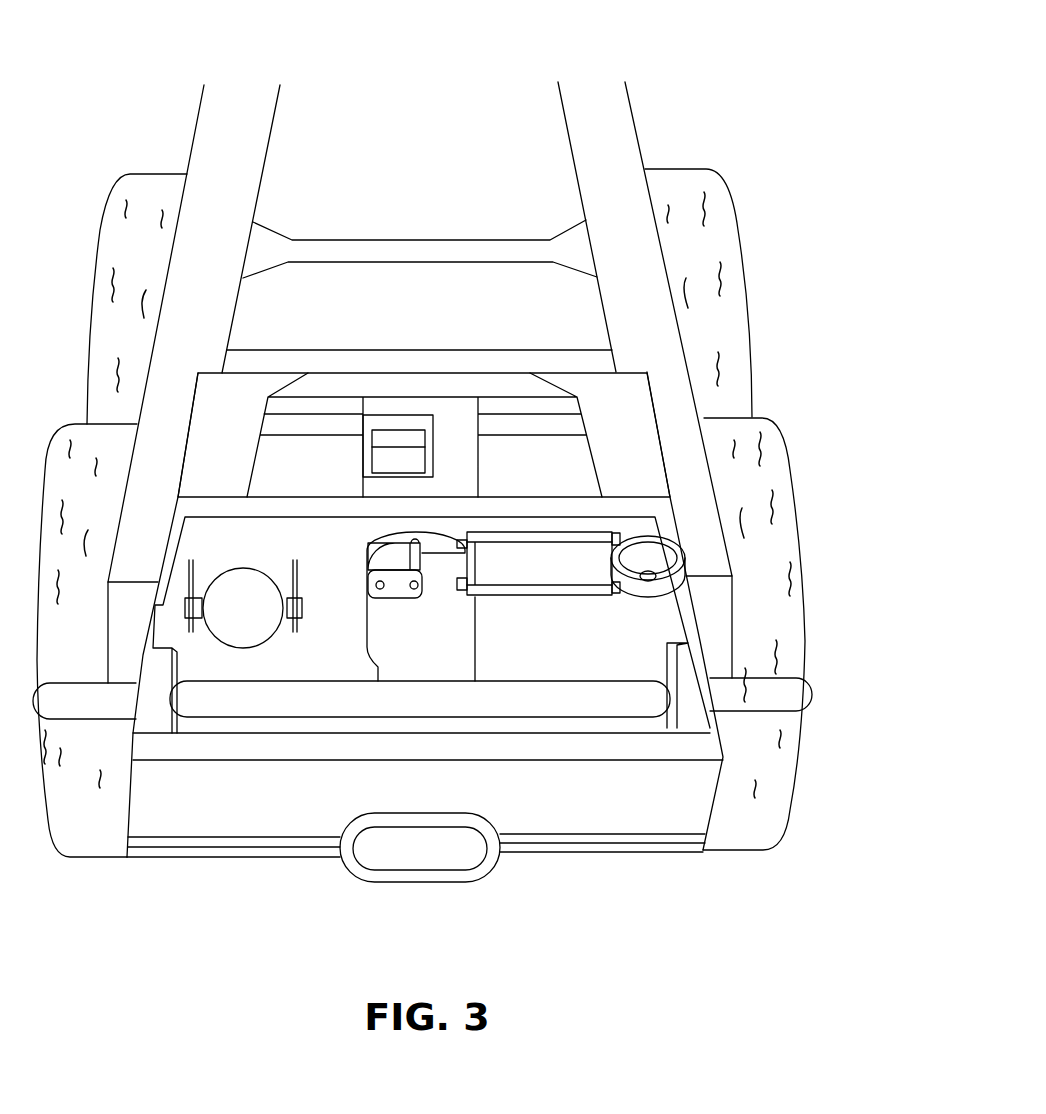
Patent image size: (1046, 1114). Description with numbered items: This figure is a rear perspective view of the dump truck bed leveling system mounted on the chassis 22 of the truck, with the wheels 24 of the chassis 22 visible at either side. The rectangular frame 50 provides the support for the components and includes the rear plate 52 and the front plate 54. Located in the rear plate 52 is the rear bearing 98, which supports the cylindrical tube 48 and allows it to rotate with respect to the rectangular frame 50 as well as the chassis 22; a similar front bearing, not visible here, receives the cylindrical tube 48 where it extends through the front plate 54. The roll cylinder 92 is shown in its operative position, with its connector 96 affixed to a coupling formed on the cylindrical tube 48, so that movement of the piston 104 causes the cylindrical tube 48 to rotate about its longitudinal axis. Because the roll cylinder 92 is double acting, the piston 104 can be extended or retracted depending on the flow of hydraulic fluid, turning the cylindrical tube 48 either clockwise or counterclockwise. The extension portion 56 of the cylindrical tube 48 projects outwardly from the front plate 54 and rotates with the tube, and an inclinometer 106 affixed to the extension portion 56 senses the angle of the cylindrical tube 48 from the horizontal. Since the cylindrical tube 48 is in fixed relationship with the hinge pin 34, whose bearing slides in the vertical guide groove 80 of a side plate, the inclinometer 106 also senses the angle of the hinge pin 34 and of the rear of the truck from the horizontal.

The chassis 22 is at (622, 128).
The wheels 24 is at (121, 190).
The hinge pin 34 is at (95, 703).
The cylindrical tube 48 is at (478, 642).
The rectangular frame 50 is at (110, 791).
The rear plate 52 is at (587, 807).
The front plate 54 is at (303, 512).
The extension portion 56 is at (448, 410).
The vertical guide groove 80 is at (368, 565).
The roll cylinder 92 is at (560, 570).
The connector 96 is at (395, 597).
The rear bearing 98 is at (348, 855).
The piston 104 is at (445, 568).
The inclinometer 106 is at (393, 459).